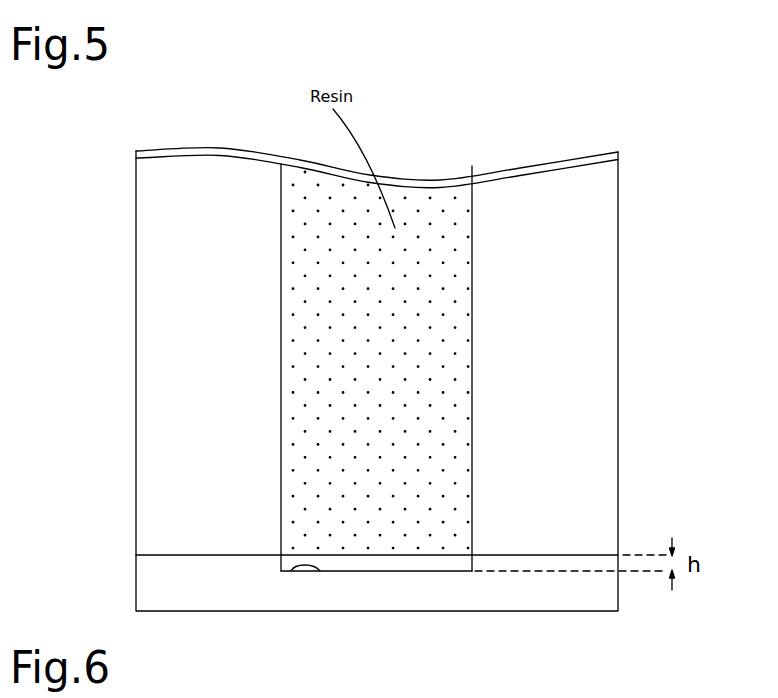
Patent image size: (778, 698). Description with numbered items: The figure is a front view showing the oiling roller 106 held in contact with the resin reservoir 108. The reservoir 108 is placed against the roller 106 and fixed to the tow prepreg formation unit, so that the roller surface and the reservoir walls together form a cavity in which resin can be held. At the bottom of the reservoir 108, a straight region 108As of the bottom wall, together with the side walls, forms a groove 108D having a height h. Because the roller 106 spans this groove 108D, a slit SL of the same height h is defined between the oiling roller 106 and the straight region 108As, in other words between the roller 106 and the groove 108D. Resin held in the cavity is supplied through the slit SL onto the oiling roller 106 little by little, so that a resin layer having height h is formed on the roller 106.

The oiling roller 106 is at (165, 351).
The resin reservoir 108 is at (136, 581).
The straight region of the bottom wall 108As is at (292, 568).
The groove 108D is at (462, 563).
The slit SL is at (389, 563).